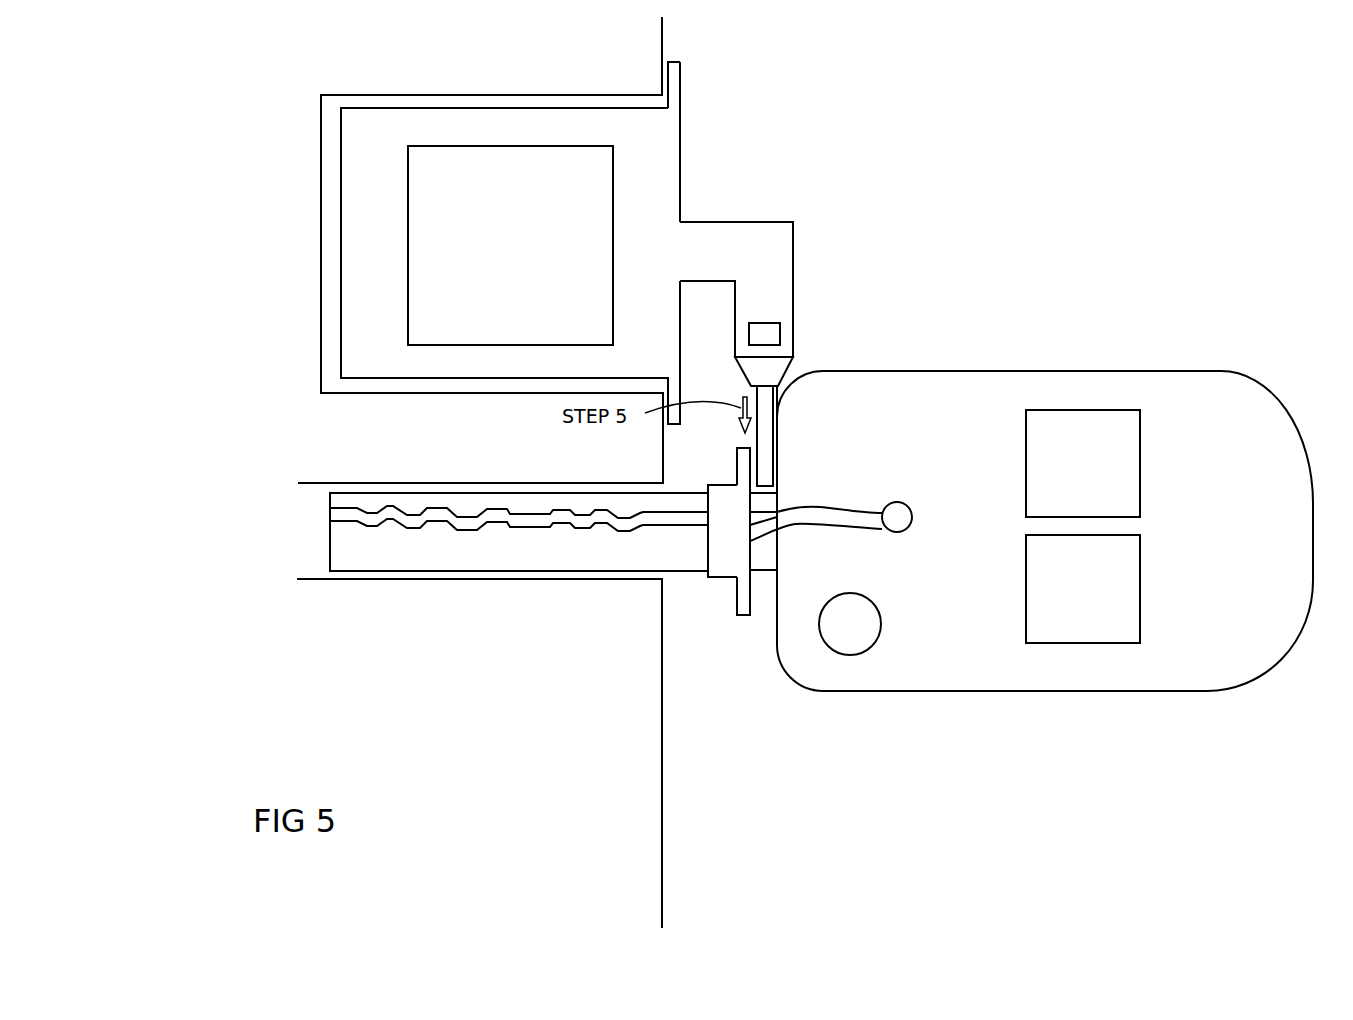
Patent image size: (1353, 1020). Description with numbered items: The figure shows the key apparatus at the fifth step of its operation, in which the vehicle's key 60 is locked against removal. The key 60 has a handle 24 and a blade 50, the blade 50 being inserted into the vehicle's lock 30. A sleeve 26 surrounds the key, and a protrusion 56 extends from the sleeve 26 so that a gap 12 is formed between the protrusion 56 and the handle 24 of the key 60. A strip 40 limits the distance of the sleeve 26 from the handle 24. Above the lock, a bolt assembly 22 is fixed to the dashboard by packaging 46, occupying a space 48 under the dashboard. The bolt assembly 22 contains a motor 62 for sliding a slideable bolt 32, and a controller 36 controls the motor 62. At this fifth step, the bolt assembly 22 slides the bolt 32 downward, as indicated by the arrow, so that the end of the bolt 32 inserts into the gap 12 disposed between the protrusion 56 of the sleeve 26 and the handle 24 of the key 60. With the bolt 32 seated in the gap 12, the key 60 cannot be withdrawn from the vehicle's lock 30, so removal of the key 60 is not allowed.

The gap 12 is at (773, 458).
The bolt assembly 22 is at (773, 282).
The key's handle 24 is at (1154, 673).
The sleeve 26 is at (732, 568).
The vehicle's lock 30 is at (477, 576).
The slideable bolt 32 is at (763, 445).
The controller 36 is at (600, 226).
The strip 40 is at (822, 520).
The packaging 46 is at (642, 139).
The space under the dashboard 48 is at (329, 252).
The key's blade 50 is at (554, 552).
The protrusion 56 is at (745, 464).
The vehicle's key 60 is at (952, 340).
The motor 62 is at (766, 334).